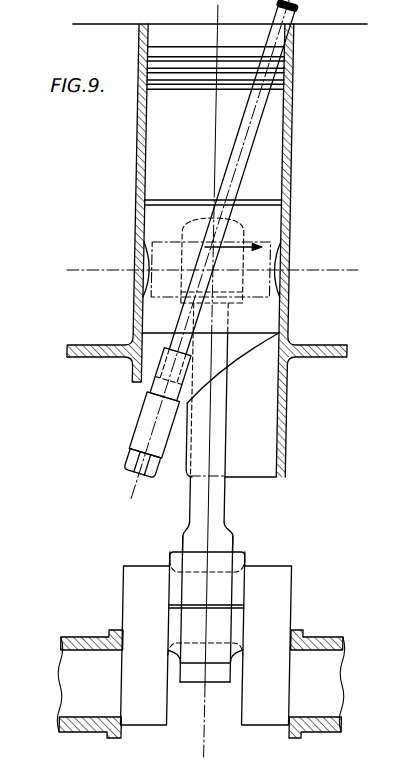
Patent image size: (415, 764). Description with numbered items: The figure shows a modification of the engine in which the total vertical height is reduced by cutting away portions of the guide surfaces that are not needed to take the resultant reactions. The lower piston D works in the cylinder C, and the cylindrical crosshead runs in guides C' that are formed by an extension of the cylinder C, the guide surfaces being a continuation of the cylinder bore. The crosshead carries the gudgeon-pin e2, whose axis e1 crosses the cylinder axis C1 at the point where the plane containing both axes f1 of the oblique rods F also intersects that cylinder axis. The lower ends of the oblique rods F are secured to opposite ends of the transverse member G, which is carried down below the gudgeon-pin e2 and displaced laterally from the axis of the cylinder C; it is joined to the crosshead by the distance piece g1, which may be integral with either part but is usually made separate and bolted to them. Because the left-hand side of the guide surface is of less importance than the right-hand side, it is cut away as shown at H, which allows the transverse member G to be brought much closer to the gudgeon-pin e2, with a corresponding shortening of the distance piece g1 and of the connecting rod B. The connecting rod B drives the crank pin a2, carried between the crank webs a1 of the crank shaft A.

The cylinder C is at (217, 194).
The guides C' is at (224, 405).
The lower piston D is at (163, 135).
The piston pin / crosshead P is at (249, 223).
The axis of the gudgeon-pin e1 is at (207, 269).
The crosshead gudgeon-pin e2 is at (264, 246).
The axis of the cylinder C1 is at (217, 13).
The oblique rods F is at (269, 100).
The axes of the side rods f1 is at (300, 10).
The transverse member G is at (145, 442).
The cut-away portion of guide surface H is at (196, 466).
The distance piece g1 is at (245, 347).
The connecting rod B is at (194, 200).
The crank pins a2 is at (201, 573).
The crank webs a1 is at (139, 587).
The crank shaft A is at (80, 685).